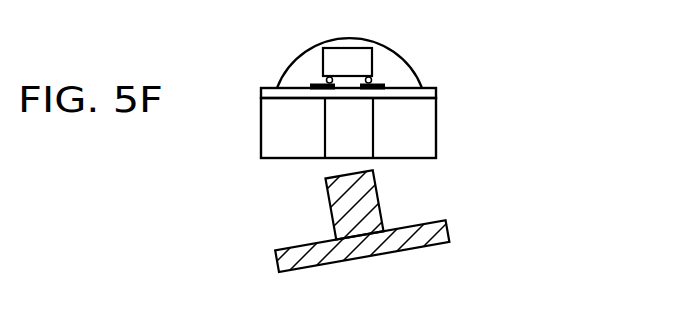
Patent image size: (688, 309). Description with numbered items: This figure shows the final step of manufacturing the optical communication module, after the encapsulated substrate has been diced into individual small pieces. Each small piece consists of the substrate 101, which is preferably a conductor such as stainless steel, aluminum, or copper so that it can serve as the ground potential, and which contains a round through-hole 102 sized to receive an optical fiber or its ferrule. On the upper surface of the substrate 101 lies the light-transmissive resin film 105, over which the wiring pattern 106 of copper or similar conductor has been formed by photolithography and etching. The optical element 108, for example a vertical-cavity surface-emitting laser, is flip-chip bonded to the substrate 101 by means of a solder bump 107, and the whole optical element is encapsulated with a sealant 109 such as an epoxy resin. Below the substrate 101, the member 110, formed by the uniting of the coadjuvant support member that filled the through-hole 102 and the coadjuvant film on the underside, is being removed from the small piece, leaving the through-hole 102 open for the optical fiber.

The substrate 101 is at (410, 132).
The through-hole 102 is at (322, 142).
The light-transmissive resin film 105 is at (270, 93).
The wiring pattern 106 is at (378, 87).
The solder bump 107 is at (325, 80).
The optical element 108 is at (343, 62).
The sealant 109 is at (352, 41).
The member 110 is at (290, 258).